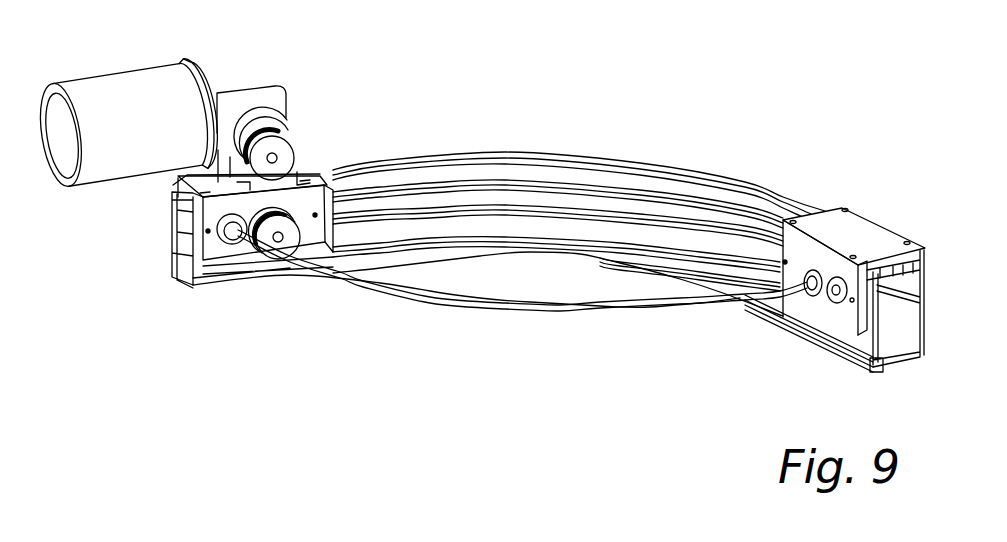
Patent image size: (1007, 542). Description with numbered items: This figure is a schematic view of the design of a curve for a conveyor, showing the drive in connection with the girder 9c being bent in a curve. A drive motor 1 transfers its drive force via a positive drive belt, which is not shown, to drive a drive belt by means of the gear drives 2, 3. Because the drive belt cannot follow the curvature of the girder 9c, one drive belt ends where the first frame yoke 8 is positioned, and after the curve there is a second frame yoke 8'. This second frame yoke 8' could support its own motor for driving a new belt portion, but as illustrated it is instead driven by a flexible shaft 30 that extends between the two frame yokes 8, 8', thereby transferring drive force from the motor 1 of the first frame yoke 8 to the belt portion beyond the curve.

The drive motor 1 is at (158, 83).
The gear drive 2 is at (270, 150).
The gear drive 3 is at (293, 225).
The first frame yoke 8 is at (255, 260).
The second frame yoke 8' is at (854, 245).
The girder 9c is at (583, 165).
The flexible shaft 30 is at (522, 303).